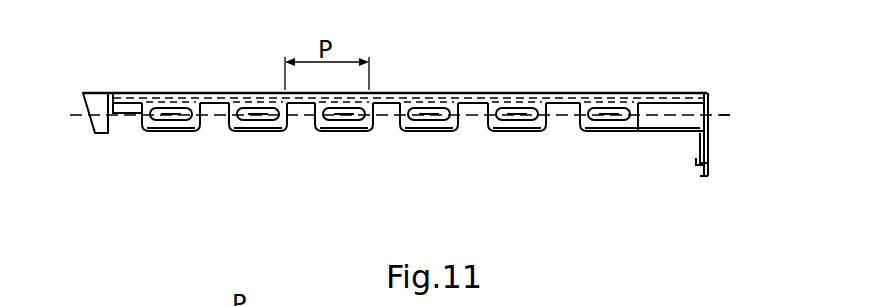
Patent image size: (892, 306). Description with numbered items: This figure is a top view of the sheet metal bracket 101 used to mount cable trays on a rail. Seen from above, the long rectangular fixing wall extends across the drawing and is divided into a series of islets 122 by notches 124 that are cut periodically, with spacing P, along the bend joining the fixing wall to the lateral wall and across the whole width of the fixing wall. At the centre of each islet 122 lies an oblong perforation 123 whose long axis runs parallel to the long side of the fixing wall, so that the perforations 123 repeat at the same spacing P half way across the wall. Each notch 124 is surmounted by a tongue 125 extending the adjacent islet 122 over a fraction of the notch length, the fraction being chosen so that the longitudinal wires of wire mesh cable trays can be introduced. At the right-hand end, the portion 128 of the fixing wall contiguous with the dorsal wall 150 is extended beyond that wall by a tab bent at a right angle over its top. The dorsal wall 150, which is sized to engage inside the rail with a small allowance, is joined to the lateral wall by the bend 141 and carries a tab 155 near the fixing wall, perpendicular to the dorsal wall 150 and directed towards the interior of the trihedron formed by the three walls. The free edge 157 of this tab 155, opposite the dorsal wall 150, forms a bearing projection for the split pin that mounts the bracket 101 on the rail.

The bracket 101 is at (210, 156).
The islet 122 is at (347, 126).
The oblong perforation 123 is at (610, 109).
The notch 124 is at (293, 123).
The tongue 125 is at (223, 93).
The portion of fixing wall 128 is at (638, 122).
The bend 141 is at (710, 98).
The dorsal wall 150 is at (710, 150).
The tab 155 is at (700, 178).
The free edge 157 is at (694, 160).